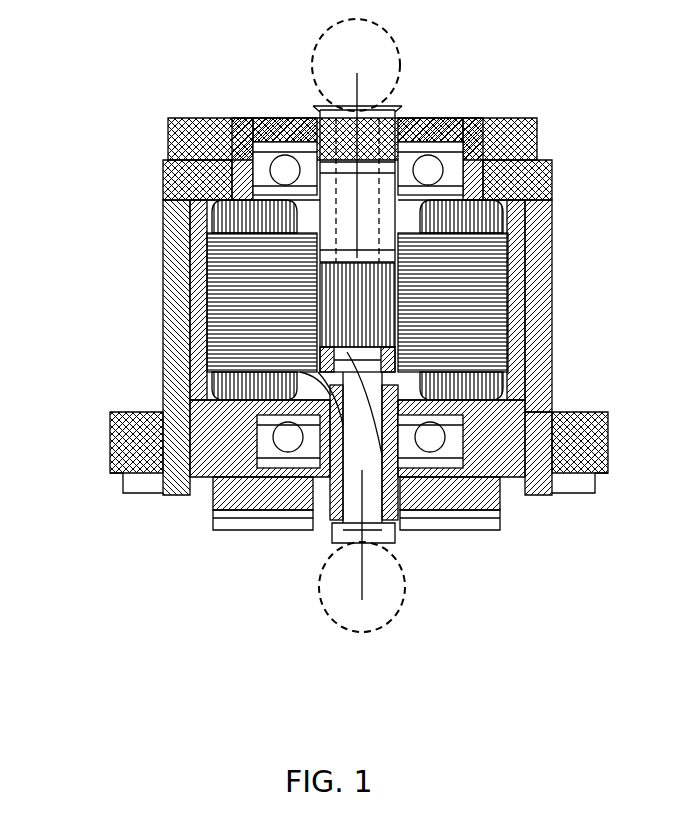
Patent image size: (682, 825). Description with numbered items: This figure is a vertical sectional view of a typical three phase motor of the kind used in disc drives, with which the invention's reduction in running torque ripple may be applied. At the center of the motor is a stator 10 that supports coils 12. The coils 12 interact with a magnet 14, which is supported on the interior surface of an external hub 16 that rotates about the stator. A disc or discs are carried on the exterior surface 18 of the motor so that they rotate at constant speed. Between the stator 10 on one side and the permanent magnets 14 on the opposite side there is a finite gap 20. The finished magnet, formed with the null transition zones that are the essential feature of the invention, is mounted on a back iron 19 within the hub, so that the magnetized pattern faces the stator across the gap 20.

The stator 10 is at (163, 322).
The coils 12 is at (163, 212).
The magnet 14 is at (163, 252).
The external hub 16 is at (163, 300).
The exterior surface 18 is at (163, 178).
The back iron 19 is at (548, 275).
The finite gap 20 is at (548, 385).